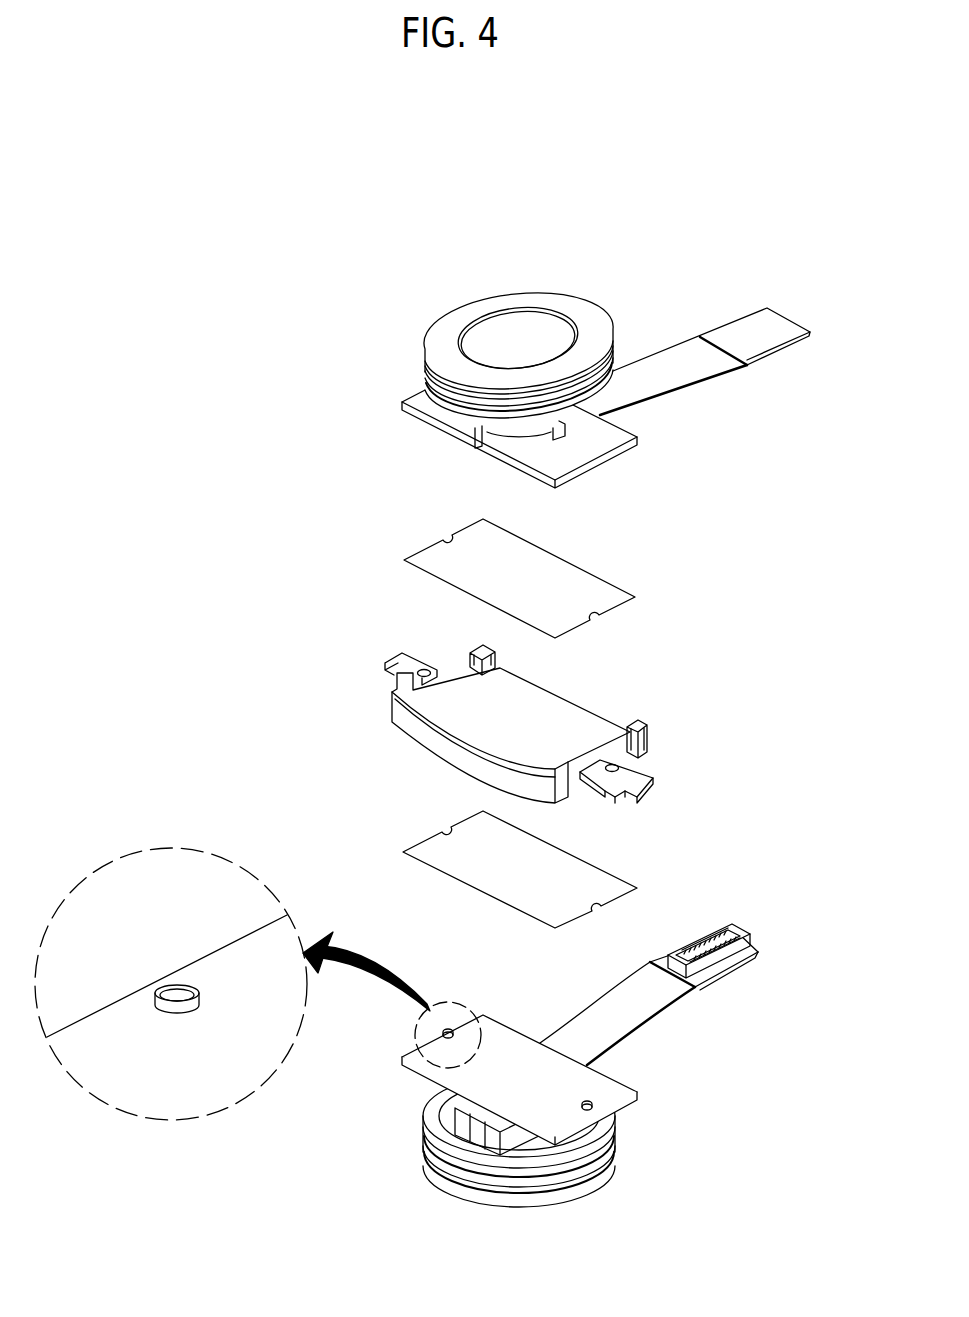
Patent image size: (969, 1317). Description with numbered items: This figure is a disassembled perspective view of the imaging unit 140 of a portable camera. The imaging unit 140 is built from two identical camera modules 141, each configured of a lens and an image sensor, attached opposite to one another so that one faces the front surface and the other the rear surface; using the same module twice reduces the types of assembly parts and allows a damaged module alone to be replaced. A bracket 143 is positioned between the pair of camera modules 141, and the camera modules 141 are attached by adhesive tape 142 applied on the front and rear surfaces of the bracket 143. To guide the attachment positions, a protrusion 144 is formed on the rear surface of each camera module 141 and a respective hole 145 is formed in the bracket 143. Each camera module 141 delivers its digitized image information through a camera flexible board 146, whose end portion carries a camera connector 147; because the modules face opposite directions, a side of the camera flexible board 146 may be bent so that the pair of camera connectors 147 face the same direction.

The imaging unit 140 is at (153, 253).
The camera module 141 is at (415, 397).
The adhesive tape 142 is at (417, 557).
The bracket 143 is at (590, 728).
The protrusion 144 is at (175, 985).
The hole 145 is at (397, 675).
The camera flexible board 146 is at (670, 383).
The camera connector 147 is at (727, 932).